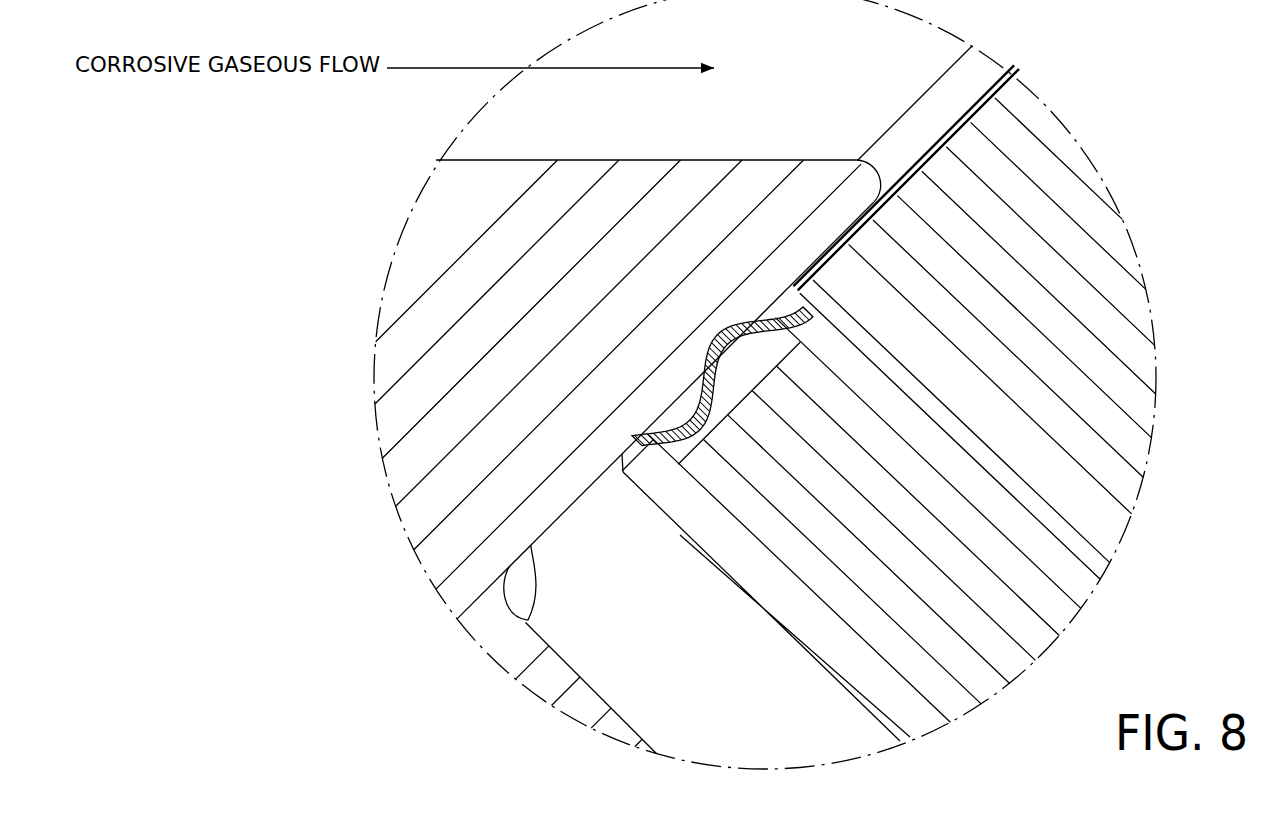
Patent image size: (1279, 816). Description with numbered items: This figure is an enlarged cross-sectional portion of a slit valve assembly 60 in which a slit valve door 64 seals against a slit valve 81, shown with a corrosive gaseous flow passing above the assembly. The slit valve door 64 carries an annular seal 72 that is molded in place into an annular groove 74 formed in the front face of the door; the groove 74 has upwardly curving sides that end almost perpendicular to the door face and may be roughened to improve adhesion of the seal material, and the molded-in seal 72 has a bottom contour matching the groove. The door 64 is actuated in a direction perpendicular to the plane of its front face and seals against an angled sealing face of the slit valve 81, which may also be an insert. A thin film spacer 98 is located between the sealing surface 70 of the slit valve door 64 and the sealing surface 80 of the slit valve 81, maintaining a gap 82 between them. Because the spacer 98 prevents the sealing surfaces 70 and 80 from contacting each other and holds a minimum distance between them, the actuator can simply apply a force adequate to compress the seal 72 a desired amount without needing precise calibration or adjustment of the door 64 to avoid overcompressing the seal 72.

The slit valve assembly 60 is at (300, 425).
The slit valve door 64 is at (1090, 547).
The sealing surface 70 is at (632, 452).
The annular seal 72 is at (773, 387).
The annular groove 74 is at (703, 435).
The sealing surface 80 is at (522, 630).
The slit valve 81 is at (427, 208).
The gap 82 is at (967, 30).
The thin film spacer 98 is at (620, 453).